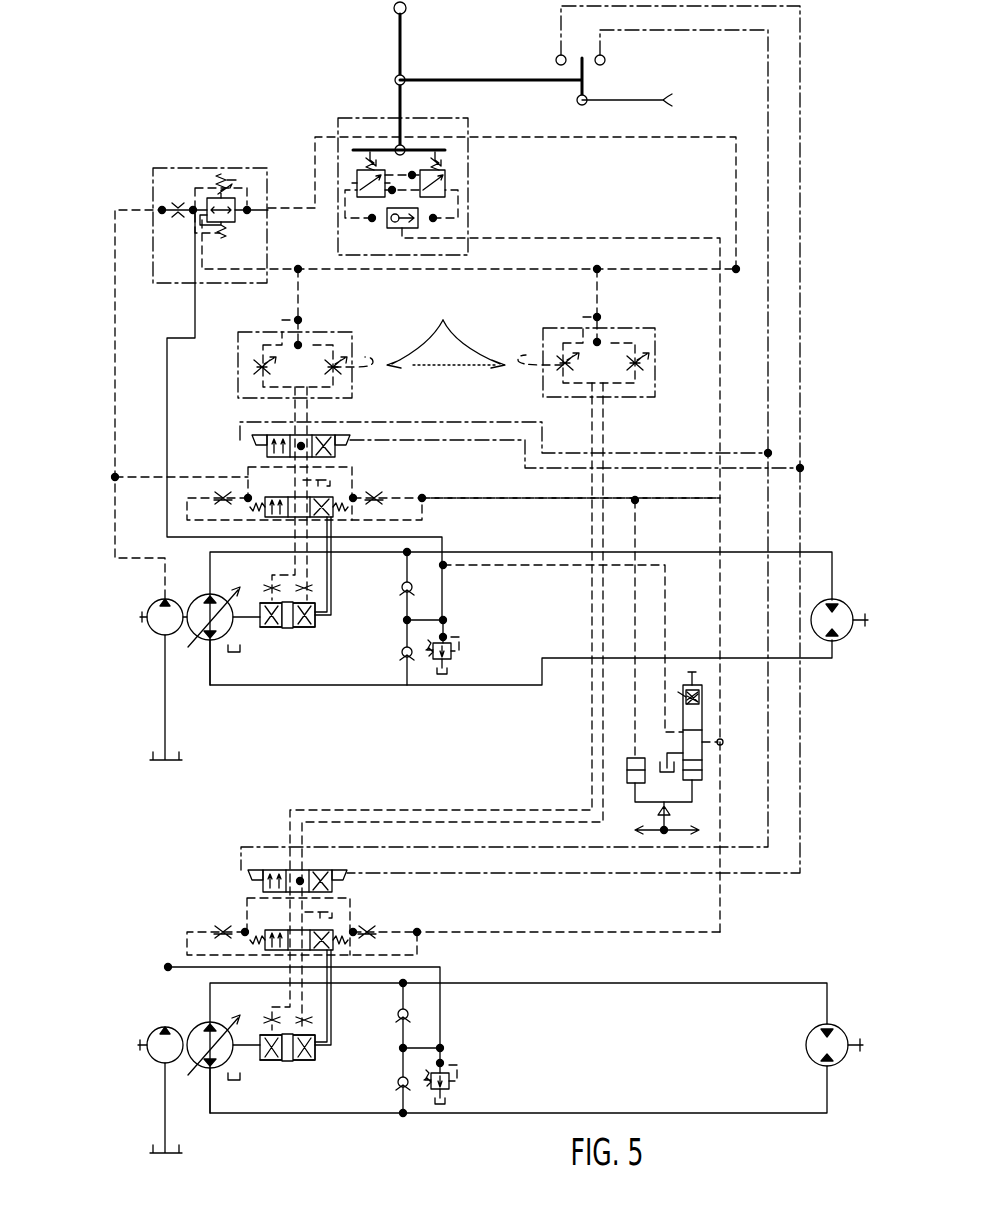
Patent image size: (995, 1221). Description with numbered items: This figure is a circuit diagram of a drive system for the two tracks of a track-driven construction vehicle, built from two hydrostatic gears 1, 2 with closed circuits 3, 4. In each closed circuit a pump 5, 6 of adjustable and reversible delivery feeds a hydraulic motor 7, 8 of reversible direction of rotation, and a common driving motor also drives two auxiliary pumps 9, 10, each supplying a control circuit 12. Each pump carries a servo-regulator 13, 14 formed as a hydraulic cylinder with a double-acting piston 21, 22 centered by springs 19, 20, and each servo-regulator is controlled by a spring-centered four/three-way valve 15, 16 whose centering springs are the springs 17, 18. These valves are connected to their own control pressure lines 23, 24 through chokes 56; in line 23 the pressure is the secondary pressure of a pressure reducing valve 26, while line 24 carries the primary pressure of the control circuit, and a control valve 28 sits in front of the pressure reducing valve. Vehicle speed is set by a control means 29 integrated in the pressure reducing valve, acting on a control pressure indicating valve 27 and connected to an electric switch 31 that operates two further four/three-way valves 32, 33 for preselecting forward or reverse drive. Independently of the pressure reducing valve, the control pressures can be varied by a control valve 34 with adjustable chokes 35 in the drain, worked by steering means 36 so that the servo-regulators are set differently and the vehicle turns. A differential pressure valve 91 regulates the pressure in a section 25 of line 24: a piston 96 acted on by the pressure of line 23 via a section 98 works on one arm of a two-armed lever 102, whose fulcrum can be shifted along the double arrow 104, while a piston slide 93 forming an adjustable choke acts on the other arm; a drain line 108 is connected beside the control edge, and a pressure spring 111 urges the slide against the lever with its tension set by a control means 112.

The hydrostatic gear 1 is at (474, 652).
The hydrostatic gear 2 is at (469, 1072).
The closed circuit 3 is at (253, 688).
The closed circuit 4 is at (260, 1115).
The pump 5 is at (200, 633).
The pump 6 is at (200, 1065).
The hydraulic motor 7 is at (840, 634).
The hydraulic motor 8 is at (838, 1063).
The auxiliary pump 9 is at (160, 626).
The auxiliary pump 10 is at (160, 1058).
The control circuit 12 is at (165, 577).
The servo-regulator 13 is at (313, 633).
The servo-regulator 14 is at (310, 1065).
The 4/3-way valve 15 is at (273, 500).
The 4/3-way valve 16 is at (273, 930).
The spring 17 is at (265, 514).
The spring 18 is at (265, 946).
The spring 19 is at (270, 630).
The spring 20 is at (270, 1062).
The double-acting piston 21 is at (287, 630).
The double-acting piston 22 is at (287, 1062).
The control pressure line 23 is at (572, 500).
The control pressure line 24 is at (523, 568).
The section of control pressure line 25 is at (722, 905).
The pressure reducing valve 26 is at (496, 494).
The control pressure indicating valve 27 is at (356, 178).
The control valve 28 is at (179, 152).
The control means 29 is at (398, 32).
The electric switch 31 is at (546, 44).
The 4/3-way valve 32 is at (265, 455).
The 4/3-way valve 33 is at (265, 883).
The control valve 34 is at (326, 318).
The adjustable choke 35 is at (258, 360).
The steering means 36 is at (446, 328).
The choke 56 is at (222, 490).
The differential pressure valve 91 is at (690, 748).
The piston slide 93 is at (695, 746).
The piston 96 is at (627, 767).
The section 98 is at (650, 547).
The two-armed lever 102 is at (640, 807).
The double arrow 104 is at (664, 835).
The drain line 108 is at (675, 746).
The pressure spring 111 is at (700, 698).
The control means 112 is at (698, 683).